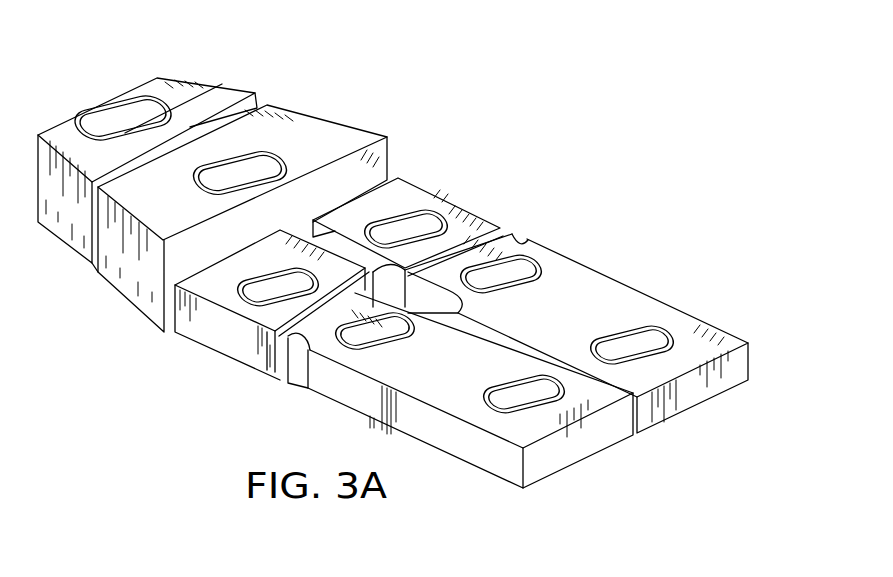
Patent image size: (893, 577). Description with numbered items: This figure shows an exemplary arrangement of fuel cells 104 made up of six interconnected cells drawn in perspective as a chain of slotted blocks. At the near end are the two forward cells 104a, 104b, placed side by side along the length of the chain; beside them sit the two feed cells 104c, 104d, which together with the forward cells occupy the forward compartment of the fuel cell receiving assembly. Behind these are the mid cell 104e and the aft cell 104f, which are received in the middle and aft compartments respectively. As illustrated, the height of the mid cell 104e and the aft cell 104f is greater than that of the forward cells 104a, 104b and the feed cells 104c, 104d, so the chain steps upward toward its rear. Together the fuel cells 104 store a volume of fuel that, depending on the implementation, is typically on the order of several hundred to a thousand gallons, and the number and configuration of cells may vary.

The fuel cells 104 is at (643, 293).
The forward cell 104a is at (560, 460).
The forward cell 104b is at (705, 393).
The feed cell 104c is at (225, 348).
The feed cell 104d is at (437, 210).
The mid cell 104e is at (315, 127).
The aft cell 104f is at (228, 95).